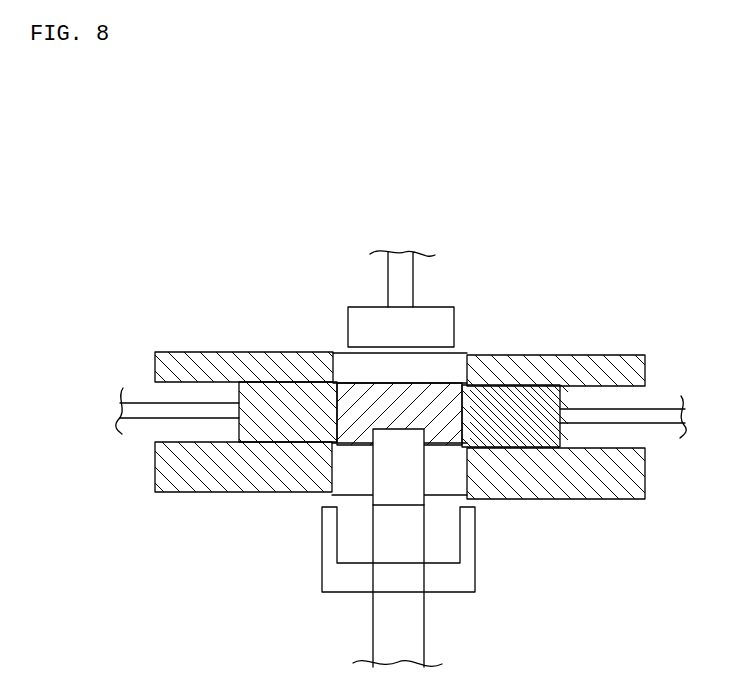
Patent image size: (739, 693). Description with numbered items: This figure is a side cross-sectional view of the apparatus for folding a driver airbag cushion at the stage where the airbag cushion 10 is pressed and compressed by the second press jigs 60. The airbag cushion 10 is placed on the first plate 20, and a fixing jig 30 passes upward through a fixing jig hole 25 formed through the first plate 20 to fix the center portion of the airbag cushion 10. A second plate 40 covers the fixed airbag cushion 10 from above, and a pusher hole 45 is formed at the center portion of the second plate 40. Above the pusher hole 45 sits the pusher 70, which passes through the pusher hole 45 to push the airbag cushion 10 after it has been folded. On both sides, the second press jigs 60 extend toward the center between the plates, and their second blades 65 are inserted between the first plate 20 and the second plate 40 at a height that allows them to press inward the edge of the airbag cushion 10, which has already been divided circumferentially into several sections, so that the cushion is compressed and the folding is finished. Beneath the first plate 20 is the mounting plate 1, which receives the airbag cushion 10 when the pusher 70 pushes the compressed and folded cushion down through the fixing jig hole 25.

The mounting plate 1 is at (335, 588).
The airbag cushion 10 is at (387, 408).
The first plate 20 is at (190, 486).
The fixing jig hole 25 is at (362, 470).
The fixing jig 30 is at (415, 622).
The second plate 40 is at (548, 372).
The pusher hole 45 is at (420, 374).
The second press jig 60 is at (157, 412).
The second blade 65 is at (282, 412).
The pusher 70 is at (356, 320).